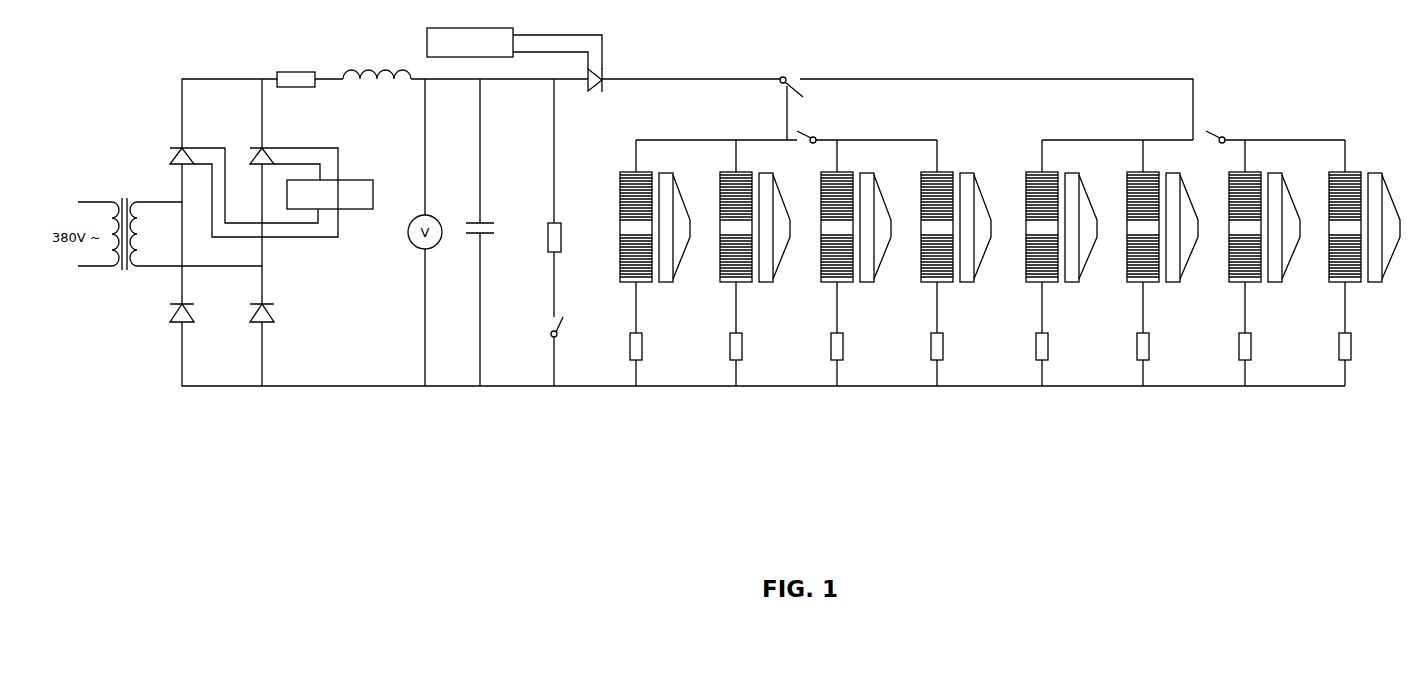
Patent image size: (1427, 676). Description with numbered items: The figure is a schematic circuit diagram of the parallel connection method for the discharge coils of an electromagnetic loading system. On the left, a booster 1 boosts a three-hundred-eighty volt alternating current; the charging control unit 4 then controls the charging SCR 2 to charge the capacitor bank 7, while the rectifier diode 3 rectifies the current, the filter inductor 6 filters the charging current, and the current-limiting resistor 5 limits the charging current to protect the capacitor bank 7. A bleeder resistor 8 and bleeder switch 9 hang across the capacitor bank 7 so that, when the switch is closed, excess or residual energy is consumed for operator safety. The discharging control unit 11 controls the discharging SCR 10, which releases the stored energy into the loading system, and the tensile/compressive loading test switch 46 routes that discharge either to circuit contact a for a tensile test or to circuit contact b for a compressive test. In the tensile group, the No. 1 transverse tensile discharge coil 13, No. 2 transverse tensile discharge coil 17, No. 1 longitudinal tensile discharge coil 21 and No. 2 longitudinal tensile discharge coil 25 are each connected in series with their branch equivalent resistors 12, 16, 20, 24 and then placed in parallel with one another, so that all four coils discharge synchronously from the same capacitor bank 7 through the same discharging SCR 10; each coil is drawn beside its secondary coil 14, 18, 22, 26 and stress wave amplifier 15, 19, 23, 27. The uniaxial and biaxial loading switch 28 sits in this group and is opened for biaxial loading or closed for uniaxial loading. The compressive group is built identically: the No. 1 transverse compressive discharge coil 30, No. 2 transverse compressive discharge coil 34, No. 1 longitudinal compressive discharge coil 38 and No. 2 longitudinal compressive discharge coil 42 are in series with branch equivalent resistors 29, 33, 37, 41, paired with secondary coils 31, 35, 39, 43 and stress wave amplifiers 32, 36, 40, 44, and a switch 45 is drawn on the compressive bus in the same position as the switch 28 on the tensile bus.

The booster 1 is at (130, 200).
The charging SCR 2 is at (262, 150).
The rectifier diode 3 is at (262, 325).
The charging control unit 4 is at (345, 190).
The current-limiting resistor 5 is at (300, 72).
The filter inductor 6 is at (385, 72).
The capacitor bank 7 is at (475, 238).
The bleeder resistor 8 is at (548, 240).
The bleeder switch 9 is at (558, 334).
The discharging SCR 10 is at (608, 74).
The discharging control unit 11 is at (478, 42).
The No. 1 transverse tensile branch equivalent resistor RT-X1 12 is at (643, 350).
The No. 1 transverse tensile discharge coil 13 is at (650, 282).
The No. 1 transverse tensile secondary coil 14 is at (672, 175).
The No. 1 transverse tensile stress wave amplifier 15 is at (682, 200).
The No. 2 transverse tensile branch equivalent resistor RT-X2 16 is at (743, 350).
The No. 2 transverse tensile discharge coil 17 is at (750, 282).
The No. 2 transverse tensile secondary coil 18 is at (772, 175).
The No. 2 transverse tensile stress wave amplifier 19 is at (782, 200).
The No. 1 longitudinal tensile branch equivalent resistor RT-Y1 20 is at (844, 350).
The No. 1 longitudinal tensile discharge coil 21 is at (851, 282).
The No. 1 longitudinal tensile secondary coil 22 is at (873, 175).
The No. 1 longitudinal tensile stress wave amplifier 23 is at (883, 200).
The No. 2 longitudinal tensile branch equivalent resistor RT-Y2 24 is at (944, 350).
The No. 2 longitudinal tensile discharge coil 25 is at (951, 282).
The No. 2 longitudinal tensile secondary coil 26 is at (973, 175).
The No. 2 longitudinal tensile stress wave amplifier 27 is at (983, 200).
The uniaxial and biaxial loading switch 28 is at (810, 135).
The No. 1 transverse compressive branch equivalent resistor RB-X1 29 is at (1049, 350).
The No. 1 transverse compressive discharge coil 30 is at (1056, 282).
The No. 1 transverse compressive secondary coil 31 is at (1079, 175).
The No. 1 transverse compressive stress wave amplifier 32 is at (1089, 200).
The No. 2 transverse compressive branch equivalent resistor RB-X2 33 is at (1150, 350).
The No. 2 transverse compressive discharge coil 34 is at (1157, 282).
The No. 2 transverse compressive secondary coil 35 is at (1180, 175).
The No. 2 transverse compressive stress wave amplifier 36 is at (1190, 200).
The No. 1 longitudinal compressive branch equivalent resistor RB-Y1 37 is at (1252, 350).
The No. 1 longitudinal compressive discharge coil 38 is at (1259, 282).
The No. 1 longitudinal compressive secondary coil 39 is at (1282, 175).
The No. 1 longitudinal compressive stress wave amplifier 40 is at (1292, 200).
The No. 2 longitudinal compressive branch equivalent resistor RB-Y2 41 is at (1352, 350).
The No. 2 longitudinal compressive discharge coil 42 is at (1359, 282).
The No. 2 longitudinal compressive secondary coil 43 is at (1382, 175).
The No. 2 longitudinal compressive stress wave amplifier 44 is at (1392, 200).
The second group switch 45 is at (1222, 136).
The tensile/compressive loading test switch 46 is at (780, 77).